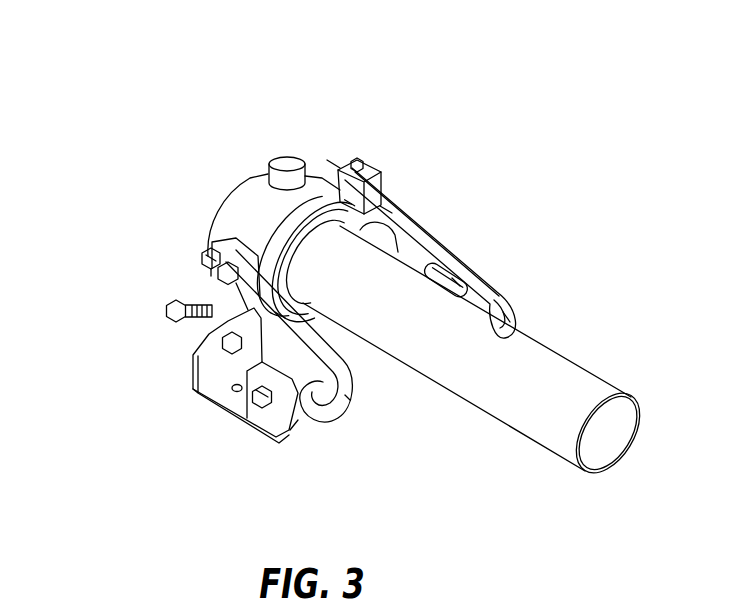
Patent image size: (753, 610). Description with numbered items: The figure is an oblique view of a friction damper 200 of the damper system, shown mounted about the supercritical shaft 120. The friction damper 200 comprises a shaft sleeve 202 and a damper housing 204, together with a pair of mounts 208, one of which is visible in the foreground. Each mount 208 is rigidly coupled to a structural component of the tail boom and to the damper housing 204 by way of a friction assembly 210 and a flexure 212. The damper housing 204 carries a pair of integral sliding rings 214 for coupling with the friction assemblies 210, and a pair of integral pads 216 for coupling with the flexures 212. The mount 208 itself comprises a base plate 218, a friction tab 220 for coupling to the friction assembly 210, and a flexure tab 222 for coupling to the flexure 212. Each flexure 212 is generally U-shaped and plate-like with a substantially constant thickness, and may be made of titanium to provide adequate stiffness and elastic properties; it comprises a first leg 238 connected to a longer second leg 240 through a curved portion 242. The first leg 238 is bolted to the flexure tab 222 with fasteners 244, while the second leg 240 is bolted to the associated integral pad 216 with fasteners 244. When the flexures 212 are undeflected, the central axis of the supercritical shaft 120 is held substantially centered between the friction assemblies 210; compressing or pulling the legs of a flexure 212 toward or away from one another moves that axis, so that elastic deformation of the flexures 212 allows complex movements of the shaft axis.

The supercritical shaft 120 is at (541, 353).
The friction damper 200 is at (429, 145).
The shaft sleeve 202 is at (361, 160).
The damper housing 204 is at (215, 162).
The mount 208 is at (398, 250).
The friction assembly 210 is at (156, 350).
The flexure 212 is at (485, 278).
The integral sliding ring 214 is at (205, 300).
The integral pad 216 is at (325, 160).
The base plate 218 is at (392, 252).
The friction tab 220 is at (280, 433).
The flexure tab 222 is at (452, 278).
The first leg 238 is at (298, 420).
The second leg 240 is at (397, 217).
The curved portion 242 is at (503, 313).
The fastener 244 is at (358, 160).